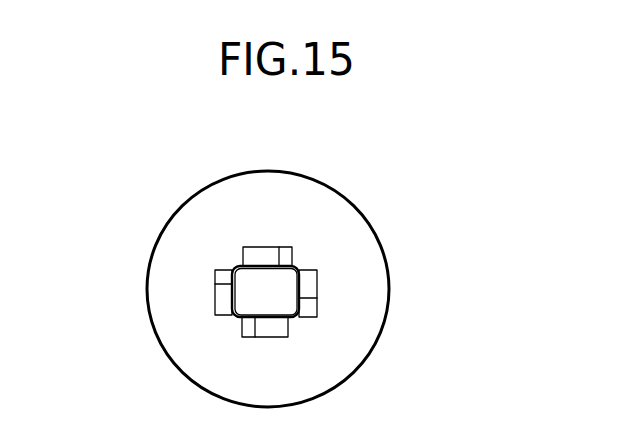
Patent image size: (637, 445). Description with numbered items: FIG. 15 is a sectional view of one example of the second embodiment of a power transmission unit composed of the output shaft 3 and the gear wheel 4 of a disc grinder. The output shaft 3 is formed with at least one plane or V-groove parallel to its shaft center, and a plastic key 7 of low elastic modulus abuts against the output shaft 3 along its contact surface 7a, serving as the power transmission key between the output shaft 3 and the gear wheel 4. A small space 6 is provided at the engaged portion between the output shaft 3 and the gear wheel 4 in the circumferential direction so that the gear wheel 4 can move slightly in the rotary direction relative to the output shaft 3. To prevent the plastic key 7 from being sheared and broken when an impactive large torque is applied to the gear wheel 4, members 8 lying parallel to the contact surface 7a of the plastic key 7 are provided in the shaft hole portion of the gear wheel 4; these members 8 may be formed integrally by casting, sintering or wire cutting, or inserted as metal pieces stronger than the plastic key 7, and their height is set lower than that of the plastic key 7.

The output shaft 3 is at (250, 280).
The gear wheel 4 is at (207, 348).
The space 6 is at (295, 265).
The plastic key 7 is at (272, 263).
The contact surface 7a is at (262, 265).
The members 8 is at (283, 260).